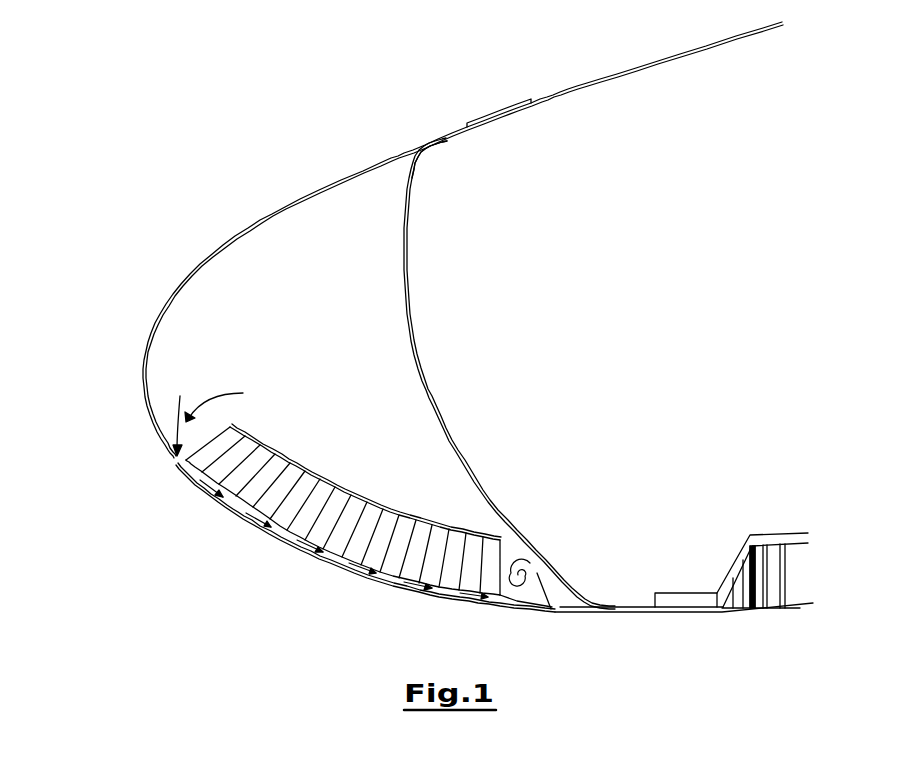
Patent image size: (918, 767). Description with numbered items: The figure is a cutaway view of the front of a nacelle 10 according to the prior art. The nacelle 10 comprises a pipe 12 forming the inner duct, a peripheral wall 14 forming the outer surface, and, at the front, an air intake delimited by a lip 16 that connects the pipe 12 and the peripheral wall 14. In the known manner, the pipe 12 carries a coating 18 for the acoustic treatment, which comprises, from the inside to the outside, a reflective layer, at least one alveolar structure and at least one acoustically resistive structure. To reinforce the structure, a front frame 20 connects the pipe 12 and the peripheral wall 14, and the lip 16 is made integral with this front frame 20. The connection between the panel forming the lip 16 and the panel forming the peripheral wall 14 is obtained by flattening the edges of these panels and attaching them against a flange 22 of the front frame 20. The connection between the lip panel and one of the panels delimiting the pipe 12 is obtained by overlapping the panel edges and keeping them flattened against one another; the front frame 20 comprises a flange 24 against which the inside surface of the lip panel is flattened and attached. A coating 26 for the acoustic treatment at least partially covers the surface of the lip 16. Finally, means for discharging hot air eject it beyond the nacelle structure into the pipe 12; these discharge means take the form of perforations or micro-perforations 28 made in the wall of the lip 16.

The nacelle 10 is at (558, 65).
The pipe 12 is at (670, 615).
The peripheral wall 14 is at (489, 116).
The lip 16 is at (143, 378).
The coating for the acoustic treatment 18 is at (760, 557).
The front frame 20 is at (447, 387).
The flange 22 is at (444, 143).
The flange 24 is at (603, 605).
The coating for the acoustic treatment 26 is at (333, 490).
The perforations or micro-perforations 28 is at (522, 609).